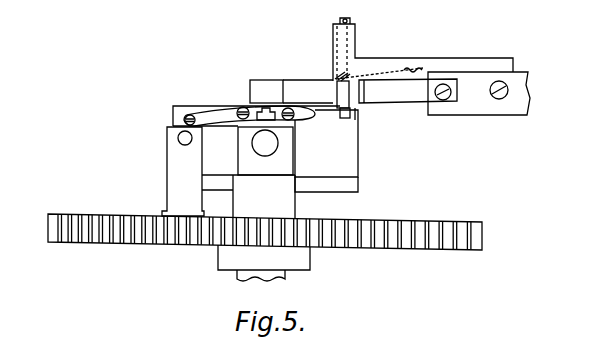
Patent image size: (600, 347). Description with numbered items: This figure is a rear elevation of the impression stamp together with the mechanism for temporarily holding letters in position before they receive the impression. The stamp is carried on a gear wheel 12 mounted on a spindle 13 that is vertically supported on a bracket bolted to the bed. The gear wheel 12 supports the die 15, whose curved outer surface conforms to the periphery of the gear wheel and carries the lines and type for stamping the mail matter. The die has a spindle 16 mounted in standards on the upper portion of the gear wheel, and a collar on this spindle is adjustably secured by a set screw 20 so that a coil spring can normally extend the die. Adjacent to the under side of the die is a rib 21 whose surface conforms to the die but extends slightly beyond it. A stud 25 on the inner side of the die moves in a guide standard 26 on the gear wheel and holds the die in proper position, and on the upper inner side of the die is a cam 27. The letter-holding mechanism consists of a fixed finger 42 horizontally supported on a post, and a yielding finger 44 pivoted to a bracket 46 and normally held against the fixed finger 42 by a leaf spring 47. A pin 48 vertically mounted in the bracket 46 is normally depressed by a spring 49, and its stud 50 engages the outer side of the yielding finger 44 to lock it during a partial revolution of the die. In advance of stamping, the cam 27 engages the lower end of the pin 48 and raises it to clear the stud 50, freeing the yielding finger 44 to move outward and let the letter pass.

The gear wheel 12 is at (265, 223).
The spindle 13 is at (276, 277).
The die 15 is at (326, 143).
The spindle 16 is at (248, 172).
The set screw 20 is at (258, 113).
The rib 21 is at (357, 190).
The stud 25 is at (178, 139).
The guide standard 26 is at (251, 161).
The cam 27 is at (207, 114).
The fixed finger 42 is at (261, 88).
The yielding finger 44 is at (308, 91).
The bracket 46 is at (475, 79).
The leaf spring 47 is at (408, 91).
The pin 48 is at (349, 22).
The spring 49 is at (386, 67).
The stud 50 is at (334, 80).